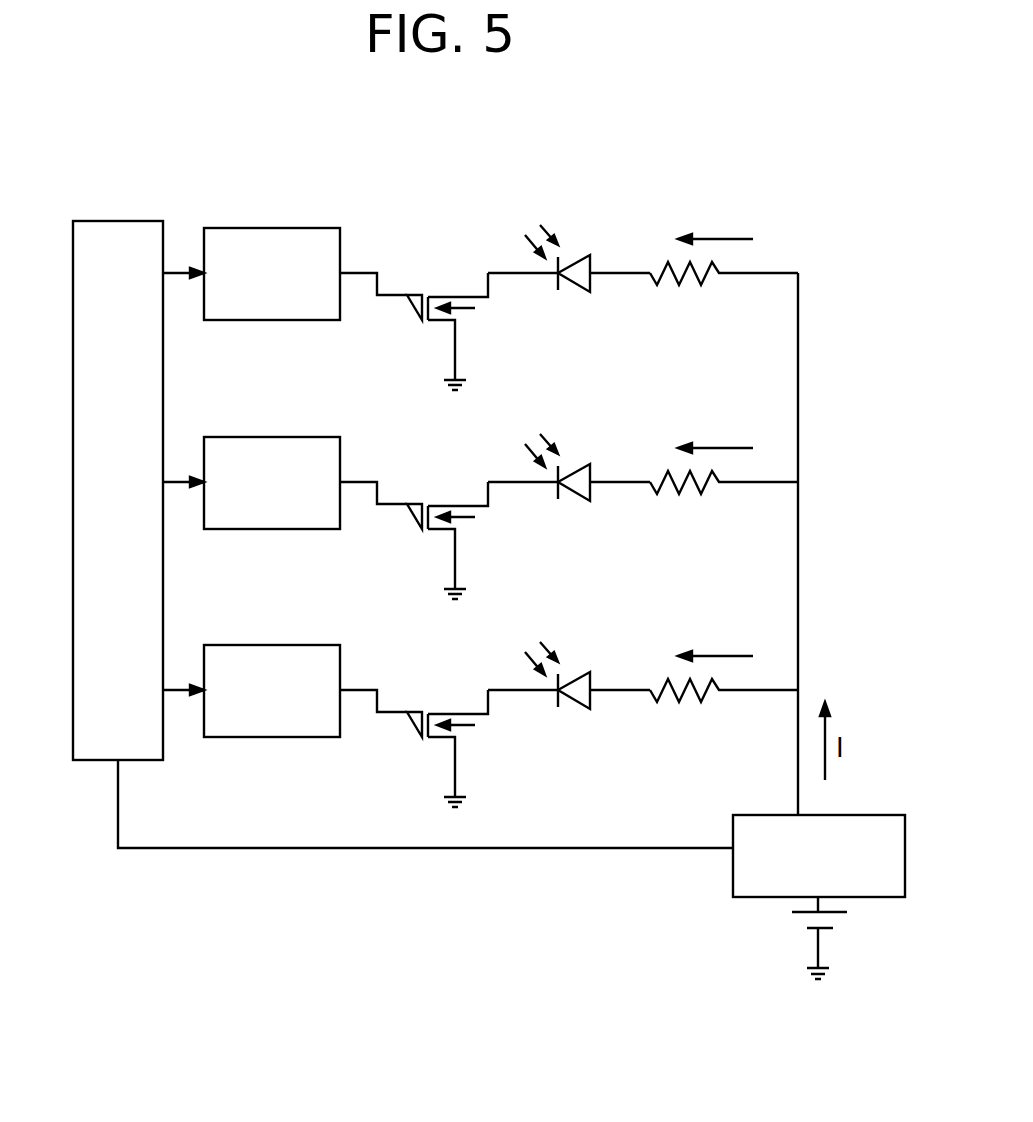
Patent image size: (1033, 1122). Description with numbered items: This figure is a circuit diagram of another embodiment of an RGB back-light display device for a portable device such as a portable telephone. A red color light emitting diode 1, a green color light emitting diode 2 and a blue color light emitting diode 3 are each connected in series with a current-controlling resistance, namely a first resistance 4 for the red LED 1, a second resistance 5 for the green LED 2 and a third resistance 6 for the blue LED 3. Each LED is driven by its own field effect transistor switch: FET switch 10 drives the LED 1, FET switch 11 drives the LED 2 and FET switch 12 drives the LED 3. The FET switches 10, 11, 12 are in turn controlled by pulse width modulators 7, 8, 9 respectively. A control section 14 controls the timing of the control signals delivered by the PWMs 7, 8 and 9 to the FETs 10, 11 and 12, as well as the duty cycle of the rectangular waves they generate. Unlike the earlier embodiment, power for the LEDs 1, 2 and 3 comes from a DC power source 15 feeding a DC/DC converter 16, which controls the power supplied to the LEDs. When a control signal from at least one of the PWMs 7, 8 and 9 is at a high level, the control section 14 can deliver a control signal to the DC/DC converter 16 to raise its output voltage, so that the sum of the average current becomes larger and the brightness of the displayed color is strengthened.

The red color light emitting diode 1 is at (566, 345).
The green color light emitting diode 2 is at (571, 532).
The blue color light emitting diode 3 is at (569, 740).
The resistance (R1) 4 is at (665, 307).
The resistance (R2) 5 is at (724, 491).
The resistance (R3) 6 is at (724, 699).
The pulse width modulator (PWM) 7 is at (271, 321).
The pulse width modulator (PWM) 8 is at (272, 522).
The pulse width modulator (PWM) 9 is at (272, 730).
The field effect transistor (FET) switch 10 is at (417, 316).
The field effect transistor (FET) switch 11 is at (433, 540).
The field effect transistor (FET) switch 12 is at (433, 748).
The control section 14 is at (130, 221).
The DC power source 15 is at (805, 918).
The DC/DC converter 16 is at (880, 899).